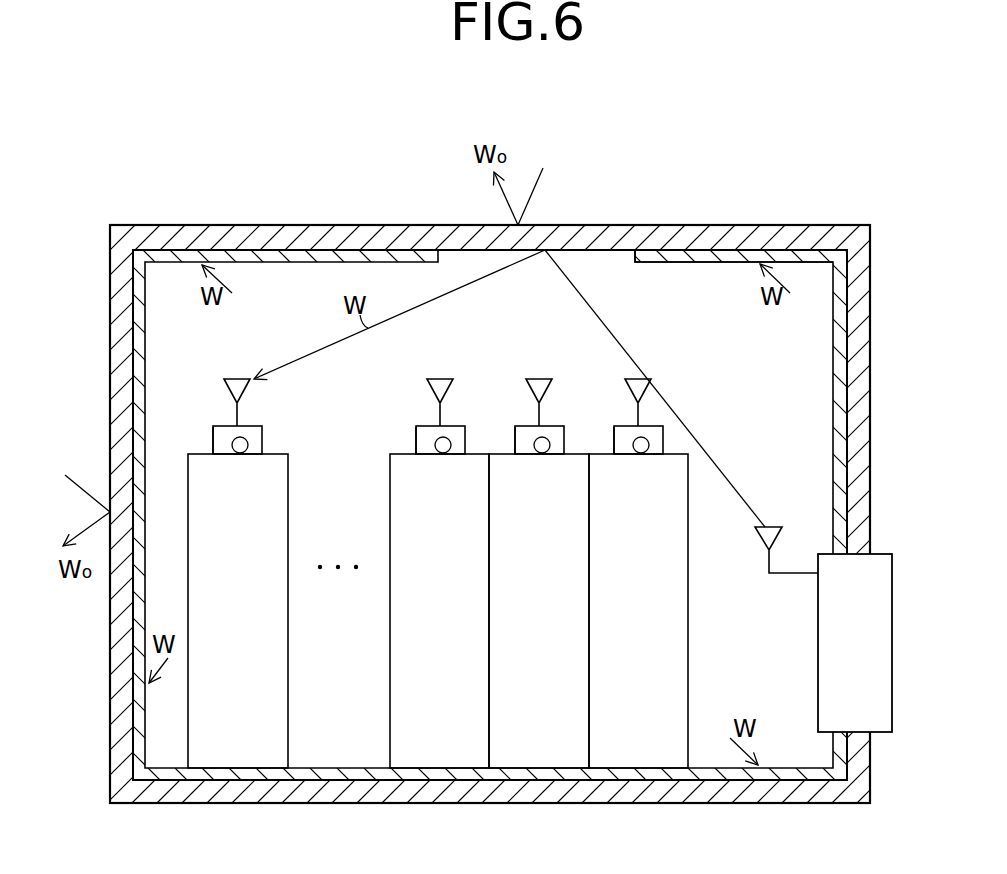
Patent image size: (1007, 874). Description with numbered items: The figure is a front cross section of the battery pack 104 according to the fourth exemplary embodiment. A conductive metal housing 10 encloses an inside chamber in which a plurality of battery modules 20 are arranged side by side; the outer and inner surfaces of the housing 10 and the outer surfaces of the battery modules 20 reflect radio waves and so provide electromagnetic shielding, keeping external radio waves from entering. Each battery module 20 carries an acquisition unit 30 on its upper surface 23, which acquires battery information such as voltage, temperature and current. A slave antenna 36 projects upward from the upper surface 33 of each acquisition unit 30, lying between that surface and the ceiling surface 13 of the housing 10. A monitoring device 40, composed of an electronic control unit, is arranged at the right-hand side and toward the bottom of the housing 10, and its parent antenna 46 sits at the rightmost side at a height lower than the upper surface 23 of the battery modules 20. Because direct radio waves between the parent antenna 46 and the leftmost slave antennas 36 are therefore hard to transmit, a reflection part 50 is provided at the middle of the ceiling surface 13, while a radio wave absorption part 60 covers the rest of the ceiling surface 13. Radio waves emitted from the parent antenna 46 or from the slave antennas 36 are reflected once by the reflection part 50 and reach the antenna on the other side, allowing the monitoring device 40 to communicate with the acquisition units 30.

The battery pack 104 is at (820, 137).
The housing 10 is at (862, 298).
The ceiling surface 13 is at (293, 247).
The radio wave absorption part 60 is at (700, 259).
The reflection part 50 is at (591, 236).
The battery module 20 is at (240, 761).
The slave antenna 36 is at (230, 386).
The acquisition unit 30 is at (256, 441).
The upper surface of the acquisition unit 33 is at (216, 427).
The upper surface of the battery module 23 is at (246, 453).
The parent antenna 46 is at (768, 527).
The monitoring device 40 is at (880, 653).